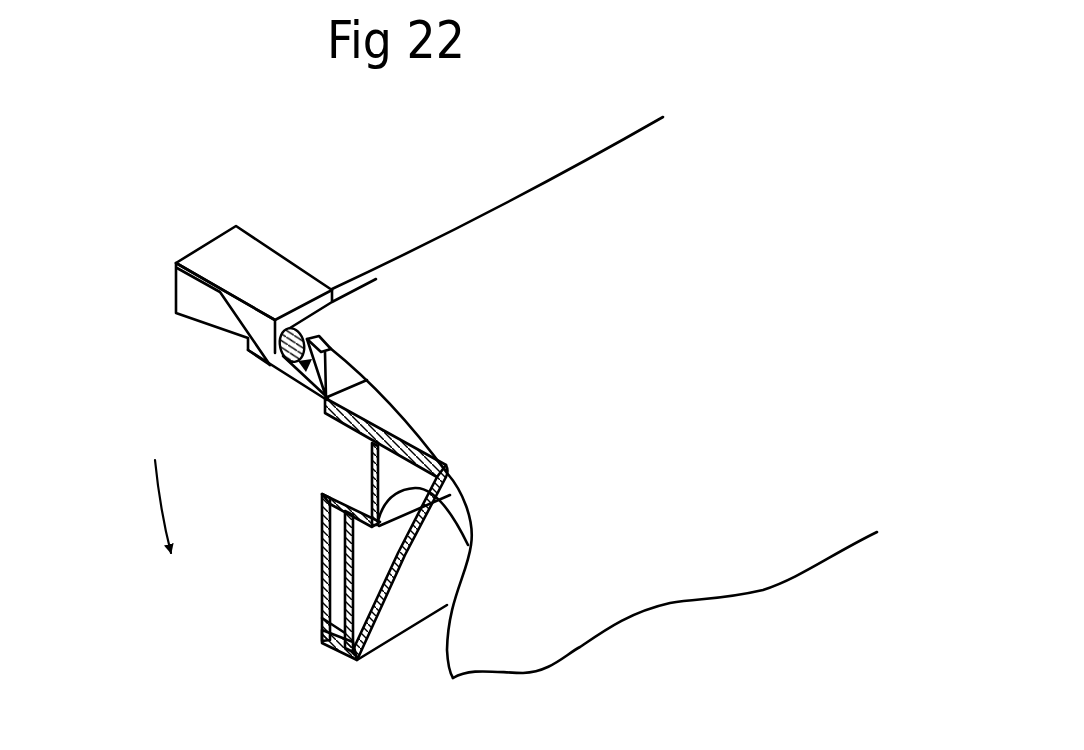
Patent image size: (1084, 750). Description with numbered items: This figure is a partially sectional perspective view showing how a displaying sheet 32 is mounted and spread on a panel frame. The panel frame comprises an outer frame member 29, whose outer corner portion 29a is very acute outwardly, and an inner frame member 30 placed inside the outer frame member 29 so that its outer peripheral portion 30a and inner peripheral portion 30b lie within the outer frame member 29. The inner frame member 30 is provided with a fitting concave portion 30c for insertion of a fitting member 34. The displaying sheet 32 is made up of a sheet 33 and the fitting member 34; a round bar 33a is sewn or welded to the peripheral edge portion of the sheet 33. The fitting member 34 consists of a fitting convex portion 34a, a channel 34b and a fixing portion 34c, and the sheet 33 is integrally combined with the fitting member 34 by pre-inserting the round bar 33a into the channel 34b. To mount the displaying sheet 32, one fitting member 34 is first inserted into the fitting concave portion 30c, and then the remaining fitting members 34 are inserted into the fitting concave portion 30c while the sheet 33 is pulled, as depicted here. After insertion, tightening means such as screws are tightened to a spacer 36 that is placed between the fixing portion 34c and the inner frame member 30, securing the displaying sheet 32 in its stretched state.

The outer frame member 29 is at (400, 620).
The outer corner portion 29a is at (447, 472).
The inner frame member 30 is at (473, 538).
The outer peripheral portion 30a is at (349, 430).
The inner peripheral portion 30b is at (333, 648).
The fitting concave portion 30c is at (352, 492).
The displaying sheet 32 is at (512, 197).
The sheet 33 is at (650, 302).
The round bar 33a is at (285, 362).
The fitting member 34 is at (301, 278).
The fitting convex portion 34a is at (257, 357).
The channel 34b is at (345, 292).
The fixing portion 34c is at (263, 257).
The spacer 36 is at (337, 590).